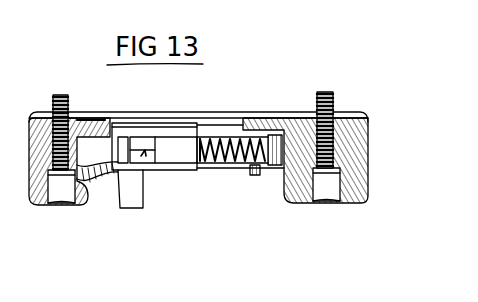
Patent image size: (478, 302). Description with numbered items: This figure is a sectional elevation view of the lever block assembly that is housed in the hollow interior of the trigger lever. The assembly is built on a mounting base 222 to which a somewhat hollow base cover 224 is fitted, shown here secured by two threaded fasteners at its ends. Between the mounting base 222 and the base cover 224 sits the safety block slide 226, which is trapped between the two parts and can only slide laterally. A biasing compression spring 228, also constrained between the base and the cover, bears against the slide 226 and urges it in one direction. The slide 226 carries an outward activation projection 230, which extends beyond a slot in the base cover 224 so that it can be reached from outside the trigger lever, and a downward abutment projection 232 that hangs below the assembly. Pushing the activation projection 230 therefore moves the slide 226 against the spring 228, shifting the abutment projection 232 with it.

The mounting base 222 is at (343, 108).
The base cover 224 is at (357, 146).
The safety block slide 226 is at (143, 208).
The biasing compression spring 228 is at (240, 153).
The outward activation projection 230 is at (138, 142).
The downward abutment projection 232 is at (130, 184).